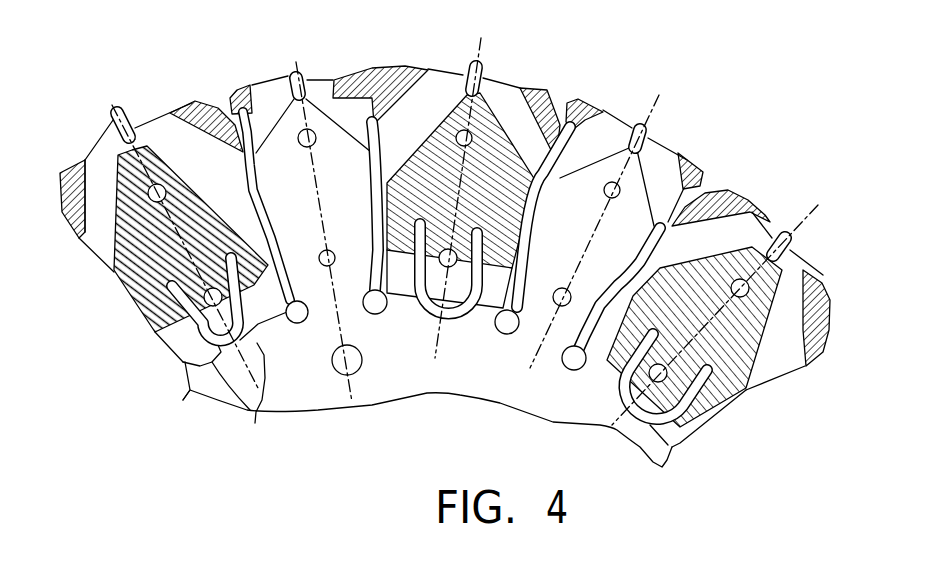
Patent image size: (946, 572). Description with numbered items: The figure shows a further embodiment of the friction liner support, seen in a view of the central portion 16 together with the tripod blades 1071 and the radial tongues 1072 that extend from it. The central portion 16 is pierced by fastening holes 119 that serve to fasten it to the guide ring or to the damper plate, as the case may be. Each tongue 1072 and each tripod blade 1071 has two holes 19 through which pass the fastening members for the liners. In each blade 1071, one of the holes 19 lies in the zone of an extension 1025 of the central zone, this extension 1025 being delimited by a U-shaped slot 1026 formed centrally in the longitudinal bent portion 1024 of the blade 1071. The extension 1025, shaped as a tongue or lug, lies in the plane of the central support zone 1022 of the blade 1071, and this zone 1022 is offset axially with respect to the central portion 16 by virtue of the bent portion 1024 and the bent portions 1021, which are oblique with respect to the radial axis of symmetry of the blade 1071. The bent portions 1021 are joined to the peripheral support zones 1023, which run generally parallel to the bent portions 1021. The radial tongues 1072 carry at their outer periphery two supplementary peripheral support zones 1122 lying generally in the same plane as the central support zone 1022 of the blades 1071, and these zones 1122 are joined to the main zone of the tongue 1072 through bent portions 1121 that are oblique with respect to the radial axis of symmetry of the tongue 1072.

The central portion 16 is at (551, 430).
The holes 19 is at (310, 132).
The fastening holes 119 is at (333, 363).
The bent portions 1021 is at (93, 243).
The central support zone 1022 is at (135, 303).
The peripheral support zones 1023 is at (68, 190).
The longitudinal bent portion 1024 is at (172, 344).
The extension 1025 is at (260, 396).
The U-shaped slot 1026 is at (192, 389).
The tripod blade 1071 is at (790, 205).
The tongue 1072 is at (716, 155).
The bent portions 1121 is at (317, 72).
The supplementary peripheral support zones 1122 is at (603, 111).